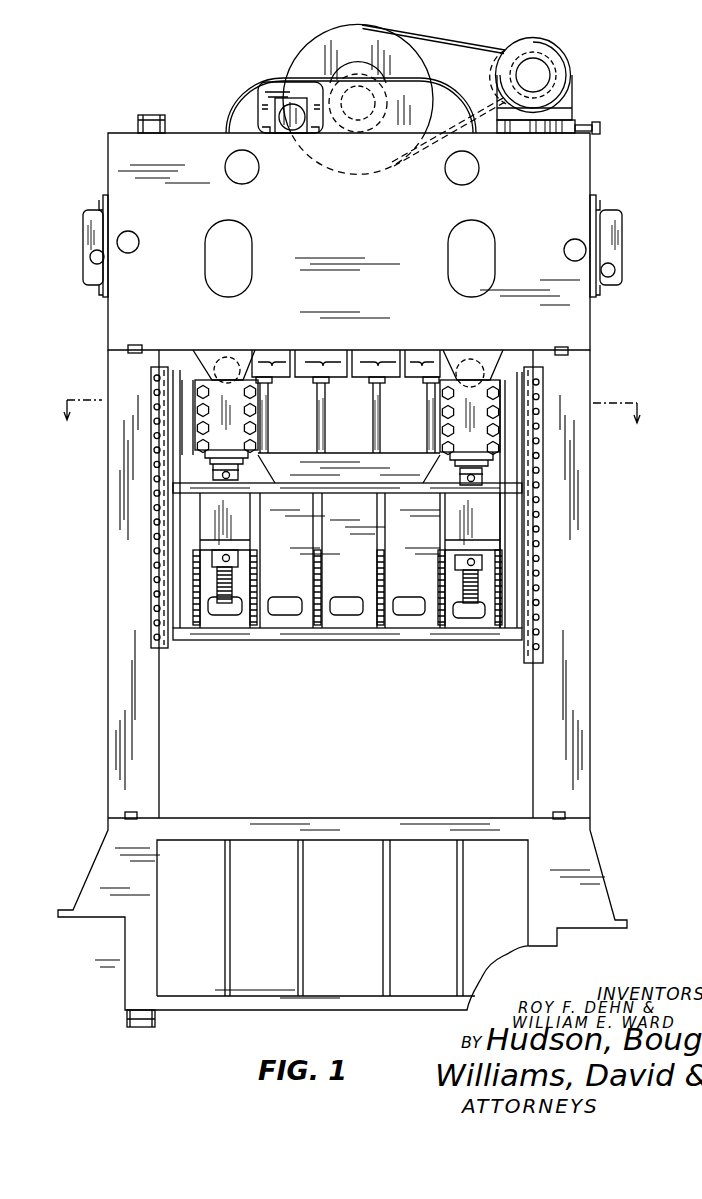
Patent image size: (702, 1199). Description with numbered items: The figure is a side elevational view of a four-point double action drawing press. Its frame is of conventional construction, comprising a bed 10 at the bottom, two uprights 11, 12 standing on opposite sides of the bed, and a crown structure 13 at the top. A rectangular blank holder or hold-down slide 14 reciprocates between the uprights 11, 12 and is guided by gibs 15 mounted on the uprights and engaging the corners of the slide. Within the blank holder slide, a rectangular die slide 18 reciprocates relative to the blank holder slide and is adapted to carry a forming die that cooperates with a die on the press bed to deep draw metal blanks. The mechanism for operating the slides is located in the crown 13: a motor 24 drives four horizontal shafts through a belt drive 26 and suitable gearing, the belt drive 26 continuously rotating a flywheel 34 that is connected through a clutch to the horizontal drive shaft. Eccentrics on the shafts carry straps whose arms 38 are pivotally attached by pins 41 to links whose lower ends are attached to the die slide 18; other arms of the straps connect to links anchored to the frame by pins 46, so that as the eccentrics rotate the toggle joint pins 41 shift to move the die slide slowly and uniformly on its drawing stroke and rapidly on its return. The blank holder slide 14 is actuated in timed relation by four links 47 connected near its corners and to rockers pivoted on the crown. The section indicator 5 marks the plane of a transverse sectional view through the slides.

The bed 10 is at (275, 854).
The upright 11 is at (108, 706).
The upright 12 is at (590, 689).
The crown structure 13 is at (546, 226).
The blank holder slide 14 is at (367, 637).
The gibs 15 is at (165, 657).
The die slide 18 is at (419, 452).
The motor 24 is at (572, 82).
The belt drive 26 is at (478, 46).
The flywheel 34 is at (310, 57).
The arm 38 is at (280, 350).
The pin 41 is at (218, 362).
The pin 46 is at (92, 258).
The links 47 is at (247, 350).
The section line 5- 5 is at (351, 425).